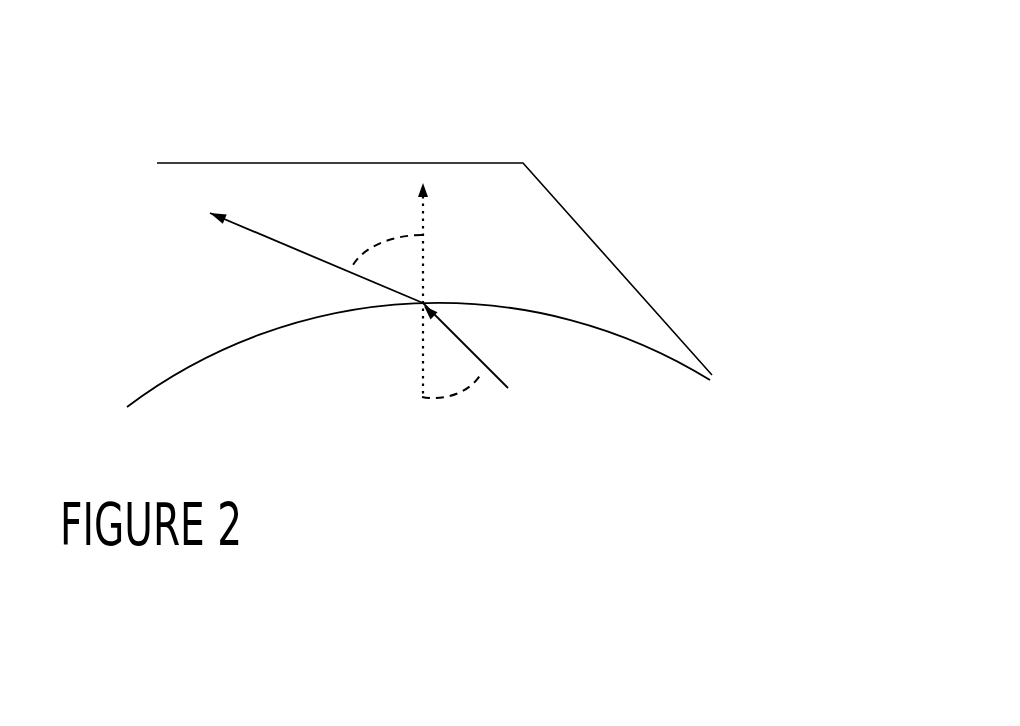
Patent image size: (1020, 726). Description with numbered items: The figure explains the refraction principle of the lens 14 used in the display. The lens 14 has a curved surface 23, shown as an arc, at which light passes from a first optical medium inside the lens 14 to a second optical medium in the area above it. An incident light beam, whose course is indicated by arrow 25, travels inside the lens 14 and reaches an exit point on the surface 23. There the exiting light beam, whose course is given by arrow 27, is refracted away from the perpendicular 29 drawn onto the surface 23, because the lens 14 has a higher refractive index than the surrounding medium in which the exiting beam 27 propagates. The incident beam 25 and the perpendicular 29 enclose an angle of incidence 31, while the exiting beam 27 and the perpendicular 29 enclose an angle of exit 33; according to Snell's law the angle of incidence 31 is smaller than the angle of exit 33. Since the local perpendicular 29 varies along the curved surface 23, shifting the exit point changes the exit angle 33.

The lens 14 is at (652, 405).
The surface 23 is at (643, 345).
The incident light beam 25 is at (465, 342).
The exiting light beam 27 is at (268, 238).
The perpendicular 29 is at (423, 240).
The angle of incidence 31 is at (465, 395).
The angle of exit 33 is at (392, 235).